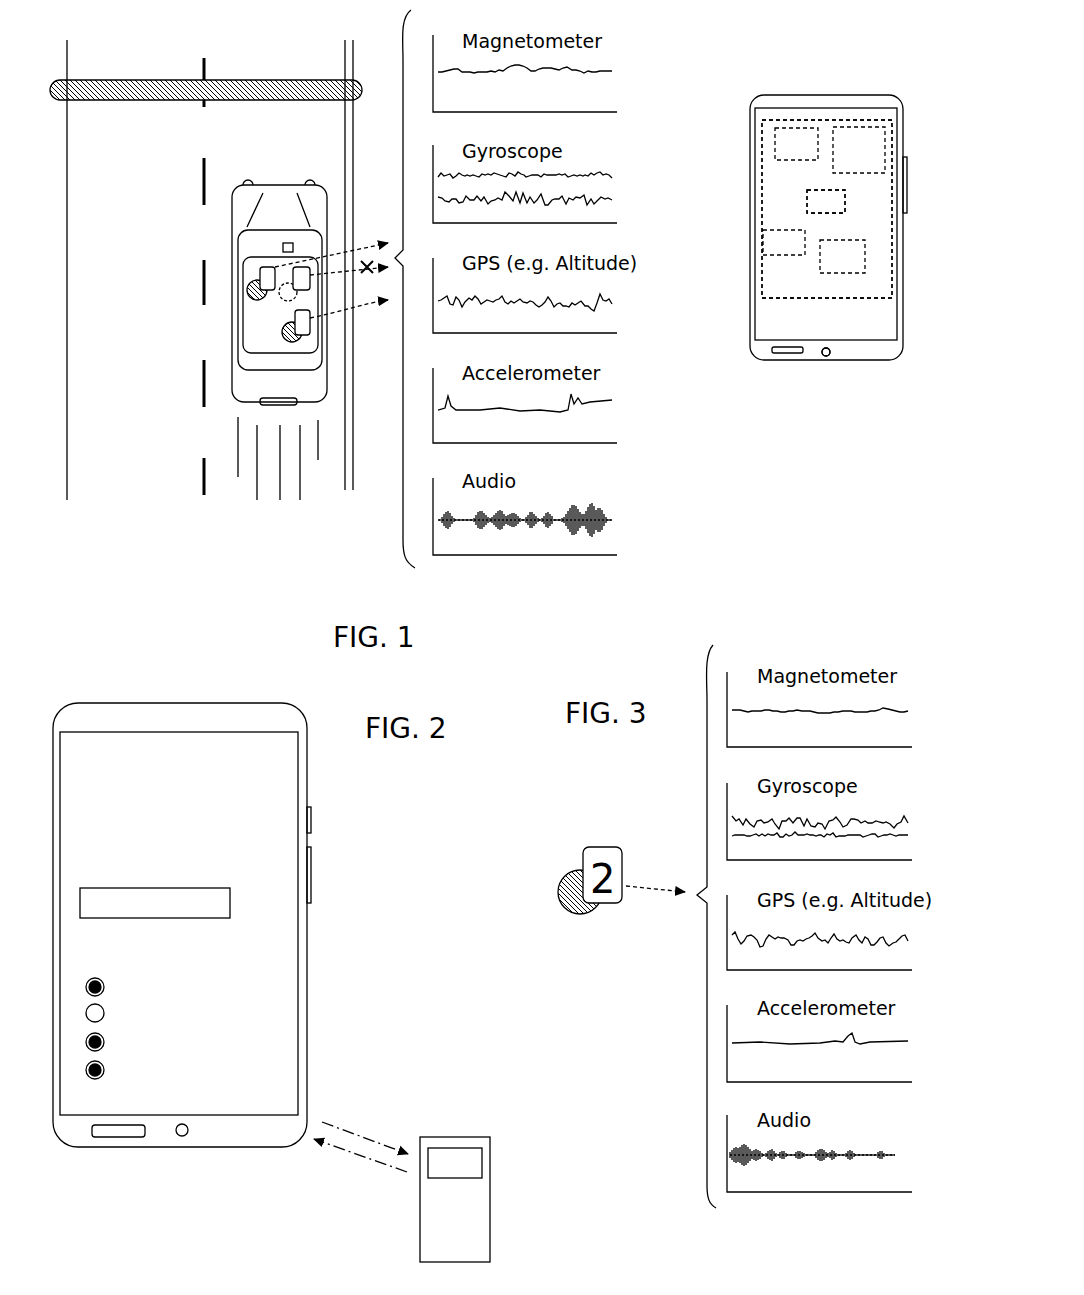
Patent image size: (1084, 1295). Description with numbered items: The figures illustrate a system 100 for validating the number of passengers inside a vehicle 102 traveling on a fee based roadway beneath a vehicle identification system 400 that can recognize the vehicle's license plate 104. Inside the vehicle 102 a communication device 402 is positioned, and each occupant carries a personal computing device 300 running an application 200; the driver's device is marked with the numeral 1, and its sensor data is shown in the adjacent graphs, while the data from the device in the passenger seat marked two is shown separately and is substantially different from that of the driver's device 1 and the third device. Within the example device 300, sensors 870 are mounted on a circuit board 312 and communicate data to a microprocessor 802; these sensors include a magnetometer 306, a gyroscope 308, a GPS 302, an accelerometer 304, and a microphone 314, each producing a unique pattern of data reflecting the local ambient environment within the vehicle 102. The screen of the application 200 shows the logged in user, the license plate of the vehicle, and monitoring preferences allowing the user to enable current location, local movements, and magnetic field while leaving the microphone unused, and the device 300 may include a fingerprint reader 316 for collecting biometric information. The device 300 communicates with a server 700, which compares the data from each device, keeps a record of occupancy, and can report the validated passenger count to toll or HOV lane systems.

In FIG. 1, the vehicle identification system 400 is at (158, 103).
In FIG. 1, the communication device 402 is at (275, 248).
In FIG. 1, the vehicle 102 is at (242, 388).
In FIG. 1, the license plate 104 is at (273, 413).
In FIG. 1, the personal computing device 300 is at (857, 364).
In FIG. 2, the personal computing device 300 is at (313, 981).
In FIG. 1, the device "1" 1 is at (764, 93).
In FIG. 1, the magnetometer 306 is at (788, 141).
In FIG. 1, the gyroscope 308 is at (813, 202).
In FIG. 1, the GPS 302 is at (781, 241).
In FIG. 1, the accelerometer 304 is at (832, 264).
In FIG. 1, the microphone 314 is at (817, 356).
In FIG. 1, the microprocessor 802 is at (860, 147).
In FIG. 1, the sensors 870 is at (858, 214).
In FIG. 1, the circuit board 312 is at (858, 290).
In FIG. 2, the application 200 is at (258, 778).
In FIG. 2, the fingerprint reader 316 is at (115, 1133).
In FIG. 2, the system 100 is at (361, 1066).
In FIG. 2, the server 700 is at (483, 1197).